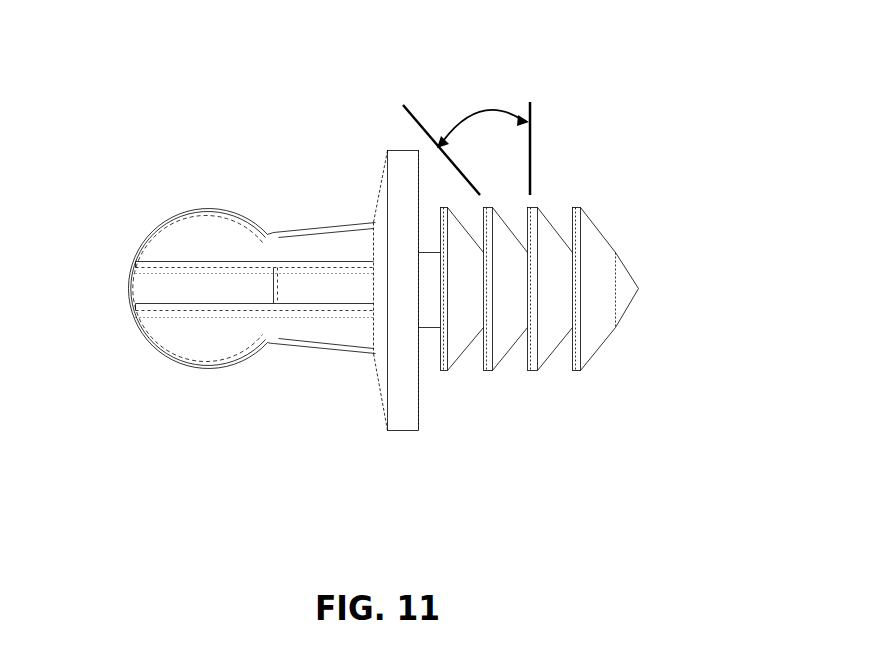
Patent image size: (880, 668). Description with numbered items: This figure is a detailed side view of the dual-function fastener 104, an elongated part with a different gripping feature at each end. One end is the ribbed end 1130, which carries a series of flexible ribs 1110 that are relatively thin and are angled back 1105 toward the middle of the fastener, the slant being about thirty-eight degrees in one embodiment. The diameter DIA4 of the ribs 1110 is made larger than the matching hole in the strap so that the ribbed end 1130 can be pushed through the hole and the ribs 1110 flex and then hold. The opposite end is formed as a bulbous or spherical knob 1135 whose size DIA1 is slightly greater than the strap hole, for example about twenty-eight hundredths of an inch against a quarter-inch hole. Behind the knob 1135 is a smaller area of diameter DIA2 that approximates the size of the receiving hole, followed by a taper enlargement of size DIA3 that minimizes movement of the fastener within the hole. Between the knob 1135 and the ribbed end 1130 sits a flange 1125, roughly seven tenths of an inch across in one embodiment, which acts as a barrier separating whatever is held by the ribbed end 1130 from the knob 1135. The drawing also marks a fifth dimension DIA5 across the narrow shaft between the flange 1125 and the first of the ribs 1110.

The dual-function fastener 104 is at (122, 76).
The angle of the ribs 1105 is at (458, 121).
The flexible ribs 1110 is at (443, 375).
The flange 1125 is at (384, 402).
The ribbed end 1130 is at (656, 480).
The knob 1135 is at (380, 480).
The knob diameter DIA1 is at (212, 385).
The smaller area diameter DIA2 is at (277, 385).
The taper enlargement size DIA3 is at (370, 385).
The rib diameter DIA4 is at (730, 207).
The shaft diameter DIA5 is at (428, 230).